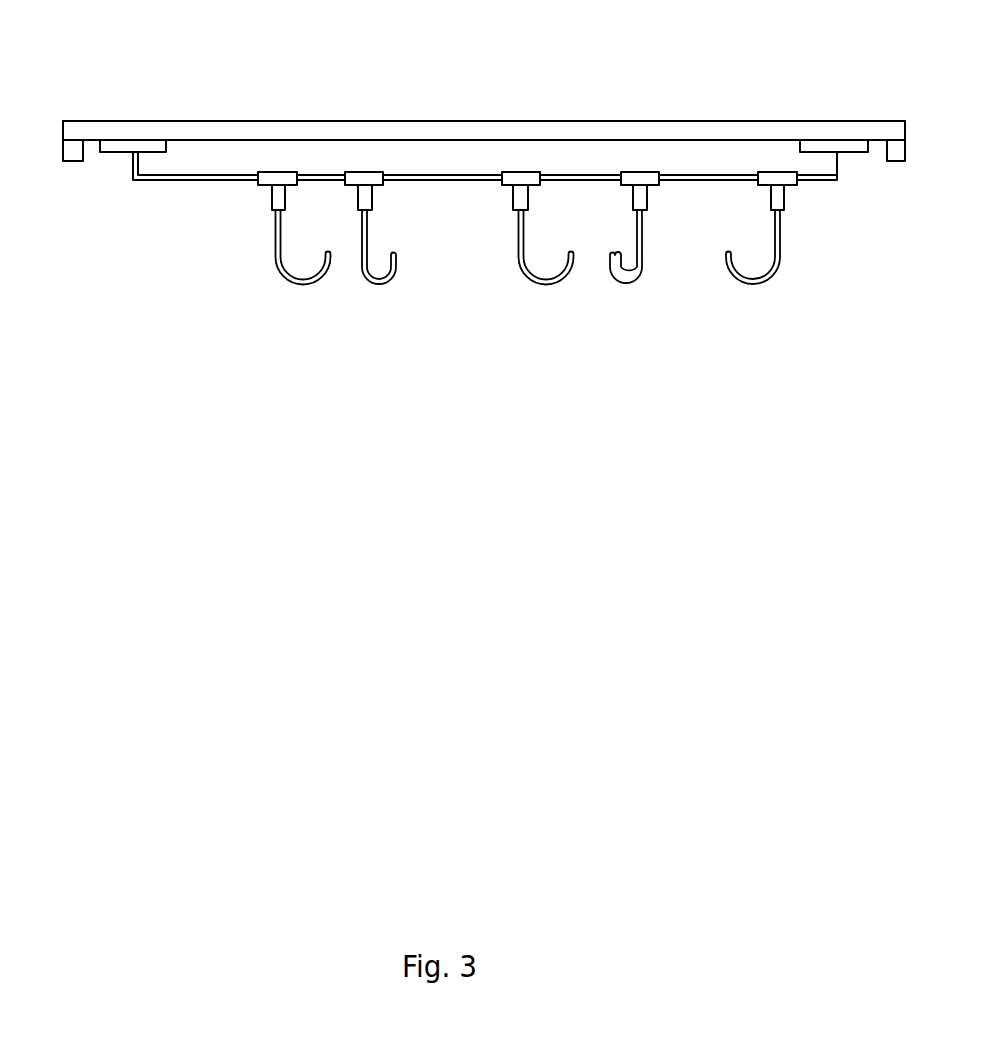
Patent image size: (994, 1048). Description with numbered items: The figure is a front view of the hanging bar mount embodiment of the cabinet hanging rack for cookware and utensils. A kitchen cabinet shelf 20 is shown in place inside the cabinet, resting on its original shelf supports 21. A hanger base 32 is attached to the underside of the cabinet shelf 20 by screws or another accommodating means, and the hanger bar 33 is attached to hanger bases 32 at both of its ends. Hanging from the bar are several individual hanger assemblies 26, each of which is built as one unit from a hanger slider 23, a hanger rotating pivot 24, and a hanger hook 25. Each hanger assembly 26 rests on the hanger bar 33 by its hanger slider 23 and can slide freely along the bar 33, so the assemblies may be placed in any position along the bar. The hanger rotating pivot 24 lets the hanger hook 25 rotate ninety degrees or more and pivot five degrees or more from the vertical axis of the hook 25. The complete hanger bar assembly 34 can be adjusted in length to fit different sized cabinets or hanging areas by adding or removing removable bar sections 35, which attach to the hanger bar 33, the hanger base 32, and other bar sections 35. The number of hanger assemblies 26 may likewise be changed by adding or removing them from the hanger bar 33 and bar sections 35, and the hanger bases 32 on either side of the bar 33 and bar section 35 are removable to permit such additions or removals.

The kitchen cabinet shelf 20 is at (473, 132).
The shelf support 21 is at (73, 152).
The hanger slider 23 is at (477, 180).
The hanger rotating pivot 24 is at (517, 197).
The hanger hook 25 is at (553, 281).
The hanger assembly 26 is at (260, 183).
The hanger base 32 is at (847, 148).
The hanger bar 33 is at (677, 180).
The hanger bar assembly 34 is at (748, 308).
The bar section 35 is at (155, 179).